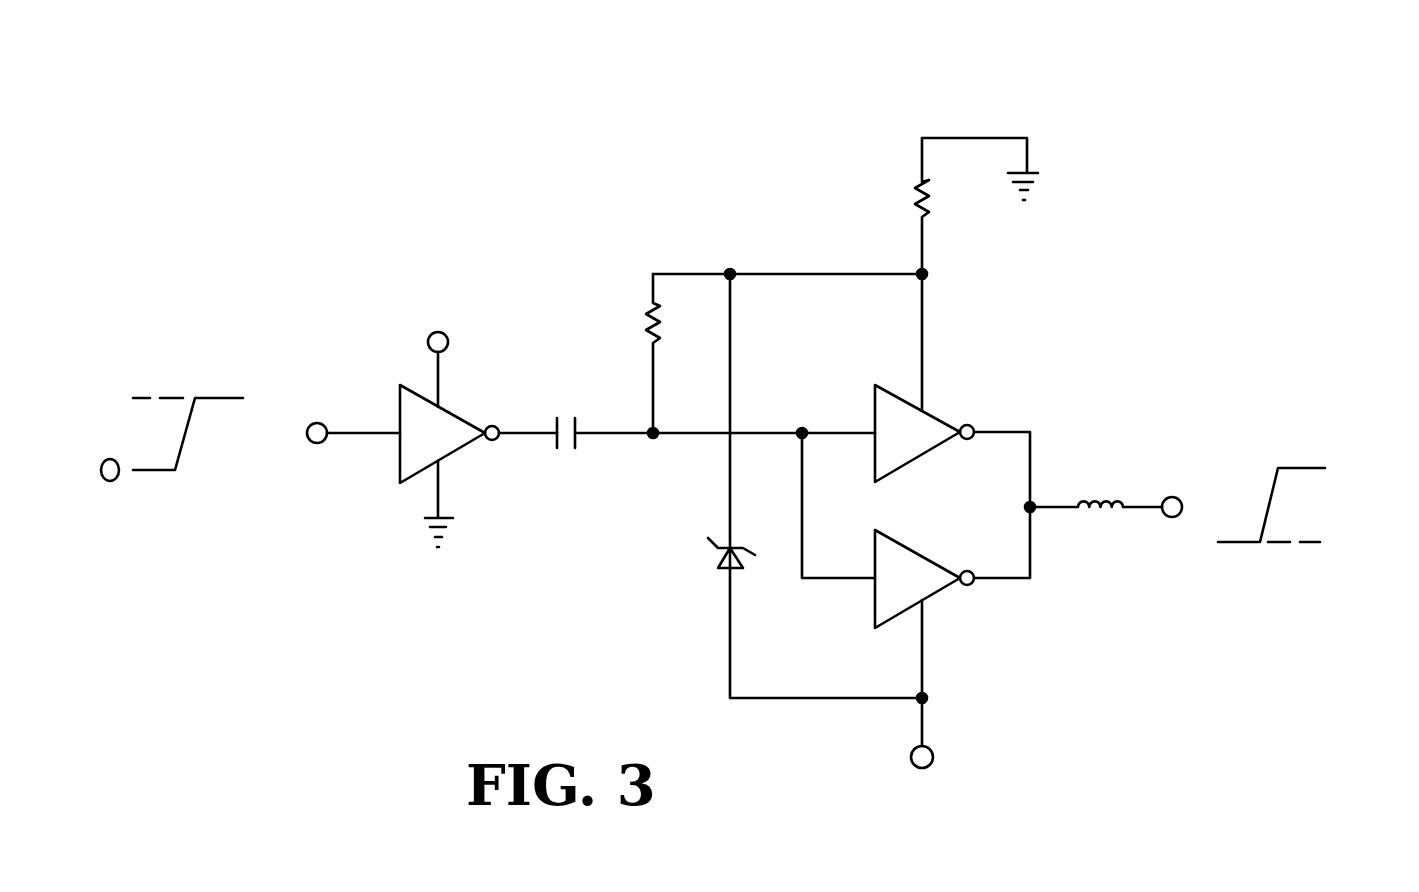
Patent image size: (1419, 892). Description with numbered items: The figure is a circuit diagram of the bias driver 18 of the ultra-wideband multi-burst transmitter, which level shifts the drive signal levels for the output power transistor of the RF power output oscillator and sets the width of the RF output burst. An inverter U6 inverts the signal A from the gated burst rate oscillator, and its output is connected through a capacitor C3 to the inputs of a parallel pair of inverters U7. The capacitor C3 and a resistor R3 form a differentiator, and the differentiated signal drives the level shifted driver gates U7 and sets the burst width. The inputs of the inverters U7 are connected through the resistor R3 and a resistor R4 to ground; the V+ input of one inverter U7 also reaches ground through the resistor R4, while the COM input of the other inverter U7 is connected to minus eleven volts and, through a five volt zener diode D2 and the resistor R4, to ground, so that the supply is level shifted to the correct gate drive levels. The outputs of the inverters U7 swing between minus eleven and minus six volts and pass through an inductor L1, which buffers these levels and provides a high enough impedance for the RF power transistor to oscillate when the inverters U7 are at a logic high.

The bias driver 18 is at (1103, 225).
The inverter U6 is at (449, 423).
The parallel pair of inverters U7 is at (936, 509).
The resistor R3 is at (626, 353).
The resistor R4 is at (944, 206).
The capacitor C3 is at (569, 457).
The zener diode D2 is at (784, 613).
The inductor L1 is at (1096, 484).